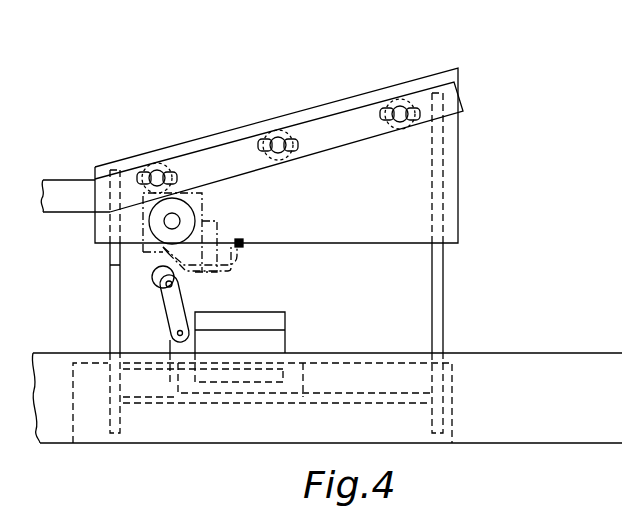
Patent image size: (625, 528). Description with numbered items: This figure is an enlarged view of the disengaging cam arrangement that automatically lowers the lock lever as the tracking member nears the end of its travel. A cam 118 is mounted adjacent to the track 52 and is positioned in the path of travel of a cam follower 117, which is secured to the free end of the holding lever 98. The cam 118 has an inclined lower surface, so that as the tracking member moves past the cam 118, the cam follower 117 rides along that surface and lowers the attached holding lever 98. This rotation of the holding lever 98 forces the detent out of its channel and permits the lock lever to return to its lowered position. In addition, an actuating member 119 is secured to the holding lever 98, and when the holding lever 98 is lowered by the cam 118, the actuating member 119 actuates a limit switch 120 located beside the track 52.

The cam 118 is at (348, 118).
The cam follower 117 is at (203, 194).
The holding lever 98 is at (220, 225).
The actuating member 119 is at (238, 261).
The limit switch 120 is at (258, 321).
The track 52 is at (56, 360).